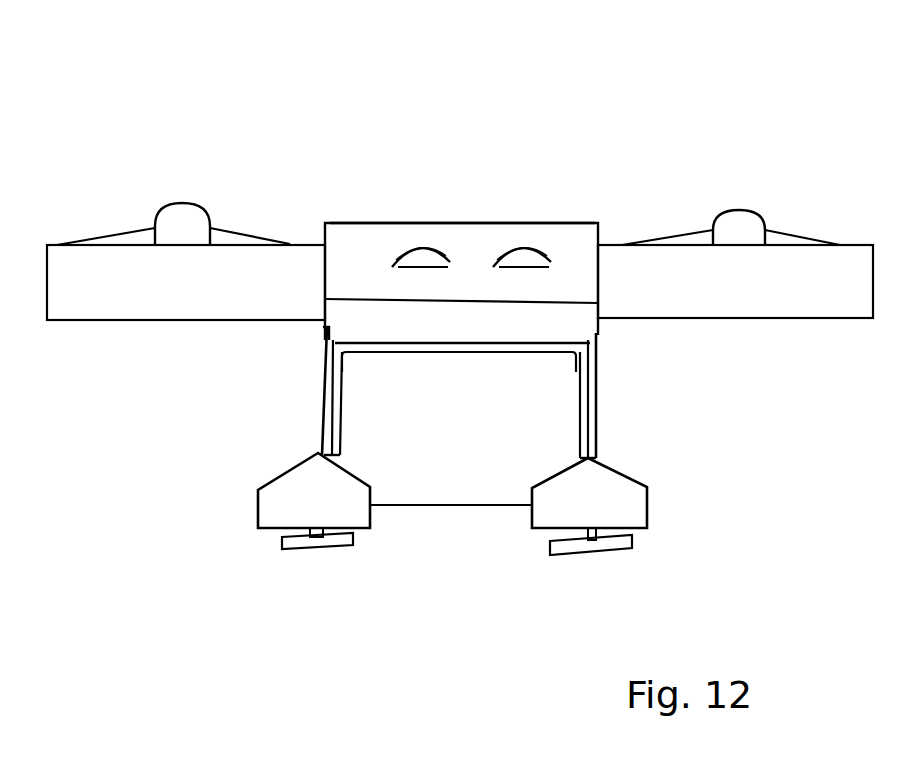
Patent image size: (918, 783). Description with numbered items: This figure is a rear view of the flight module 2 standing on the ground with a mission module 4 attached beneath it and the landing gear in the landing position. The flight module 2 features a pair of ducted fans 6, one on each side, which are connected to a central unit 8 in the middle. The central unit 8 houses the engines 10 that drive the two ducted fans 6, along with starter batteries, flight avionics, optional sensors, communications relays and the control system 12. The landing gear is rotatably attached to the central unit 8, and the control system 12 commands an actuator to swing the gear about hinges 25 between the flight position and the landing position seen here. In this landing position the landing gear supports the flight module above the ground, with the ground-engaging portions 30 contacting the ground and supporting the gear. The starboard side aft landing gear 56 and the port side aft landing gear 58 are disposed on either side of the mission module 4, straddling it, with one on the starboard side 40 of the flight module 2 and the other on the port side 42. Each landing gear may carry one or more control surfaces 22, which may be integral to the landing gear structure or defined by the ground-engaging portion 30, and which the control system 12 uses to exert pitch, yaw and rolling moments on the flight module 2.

The flight module 2 is at (278, 143).
The mission module 4 is at (465, 470).
The ducted fan 6 is at (123, 265).
The central unit 8 is at (370, 223).
The engine 10 is at (430, 237).
The control system 12 is at (558, 223).
The control surface 22 is at (275, 507).
The hinge 25 is at (318, 353).
The ground-engaging portion 30 is at (330, 540).
The starboard side 40 is at (583, 268).
The port side 42 is at (326, 273).
The starboard side aft landing gear 56 is at (597, 430).
The port side aft landing gear 58 is at (320, 435).